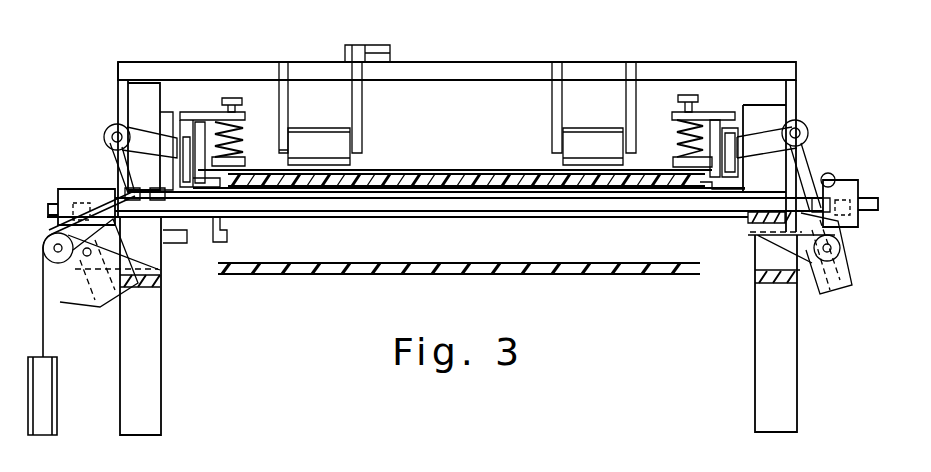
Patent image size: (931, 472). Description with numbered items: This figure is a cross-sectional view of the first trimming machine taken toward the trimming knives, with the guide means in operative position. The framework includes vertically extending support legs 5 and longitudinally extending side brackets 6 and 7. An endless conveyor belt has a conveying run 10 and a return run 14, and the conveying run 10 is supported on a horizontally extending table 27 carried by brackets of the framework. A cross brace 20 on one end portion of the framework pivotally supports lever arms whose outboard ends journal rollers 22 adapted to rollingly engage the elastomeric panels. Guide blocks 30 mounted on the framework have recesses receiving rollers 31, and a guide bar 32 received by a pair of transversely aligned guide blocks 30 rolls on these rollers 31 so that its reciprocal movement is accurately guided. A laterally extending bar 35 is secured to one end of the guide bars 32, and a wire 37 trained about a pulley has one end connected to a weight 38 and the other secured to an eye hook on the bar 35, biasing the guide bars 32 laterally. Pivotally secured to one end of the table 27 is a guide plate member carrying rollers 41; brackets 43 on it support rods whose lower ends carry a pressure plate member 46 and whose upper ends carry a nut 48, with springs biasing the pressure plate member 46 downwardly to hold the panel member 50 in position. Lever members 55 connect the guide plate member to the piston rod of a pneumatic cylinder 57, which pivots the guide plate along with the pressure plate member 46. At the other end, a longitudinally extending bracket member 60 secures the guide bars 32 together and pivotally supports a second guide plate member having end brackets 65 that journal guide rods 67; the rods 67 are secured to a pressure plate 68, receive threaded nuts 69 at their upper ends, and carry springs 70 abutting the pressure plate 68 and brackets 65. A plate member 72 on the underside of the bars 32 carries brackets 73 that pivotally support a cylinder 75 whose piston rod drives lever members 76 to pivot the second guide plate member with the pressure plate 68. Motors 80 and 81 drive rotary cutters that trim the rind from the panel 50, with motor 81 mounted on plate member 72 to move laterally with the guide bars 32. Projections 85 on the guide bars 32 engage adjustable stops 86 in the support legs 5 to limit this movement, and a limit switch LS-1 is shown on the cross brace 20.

The support legs 5 is at (148, 420).
The side bracket 6 is at (133, 287).
The side bracket 7 is at (792, 287).
The conveying run 10 is at (482, 174).
The return run 14 is at (447, 263).
The cross brace 20 is at (443, 73).
The rollers 22 is at (587, 137).
The table 27 is at (480, 188).
The guide block 30 is at (860, 157).
The rollers 31 is at (100, 187).
The guide bar 32 is at (517, 205).
The laterally extending bar 35 is at (133, 193).
The wire 37 is at (50, 345).
The weight 38 is at (40, 435).
The rollers 41 is at (170, 143).
The bracket 43 is at (208, 112).
The pressure plate member 46 is at (253, 163).
The nut 48 is at (233, 98).
The panel member 50 is at (407, 170).
The lever members 55 is at (152, 143).
The pneumatic cylinder 57 is at (67, 293).
The bracket member 60 is at (730, 180).
The end bracket 65 is at (705, 112).
The guide rods 67 is at (673, 112).
The pressure plate 68 is at (682, 167).
The threaded nut 69 is at (693, 95).
The springs 70 is at (678, 140).
The plate member 72 is at (748, 225).
The brackets 73 is at (815, 318).
The cylinder 75 is at (833, 282).
The lever members 76 is at (770, 132).
The motor 80 is at (153, 113).
The motor 81 is at (762, 115).
The projections 85 is at (222, 235).
The adjustable stops 86 is at (187, 237).
The limit switch LS-1 is at (358, 57).